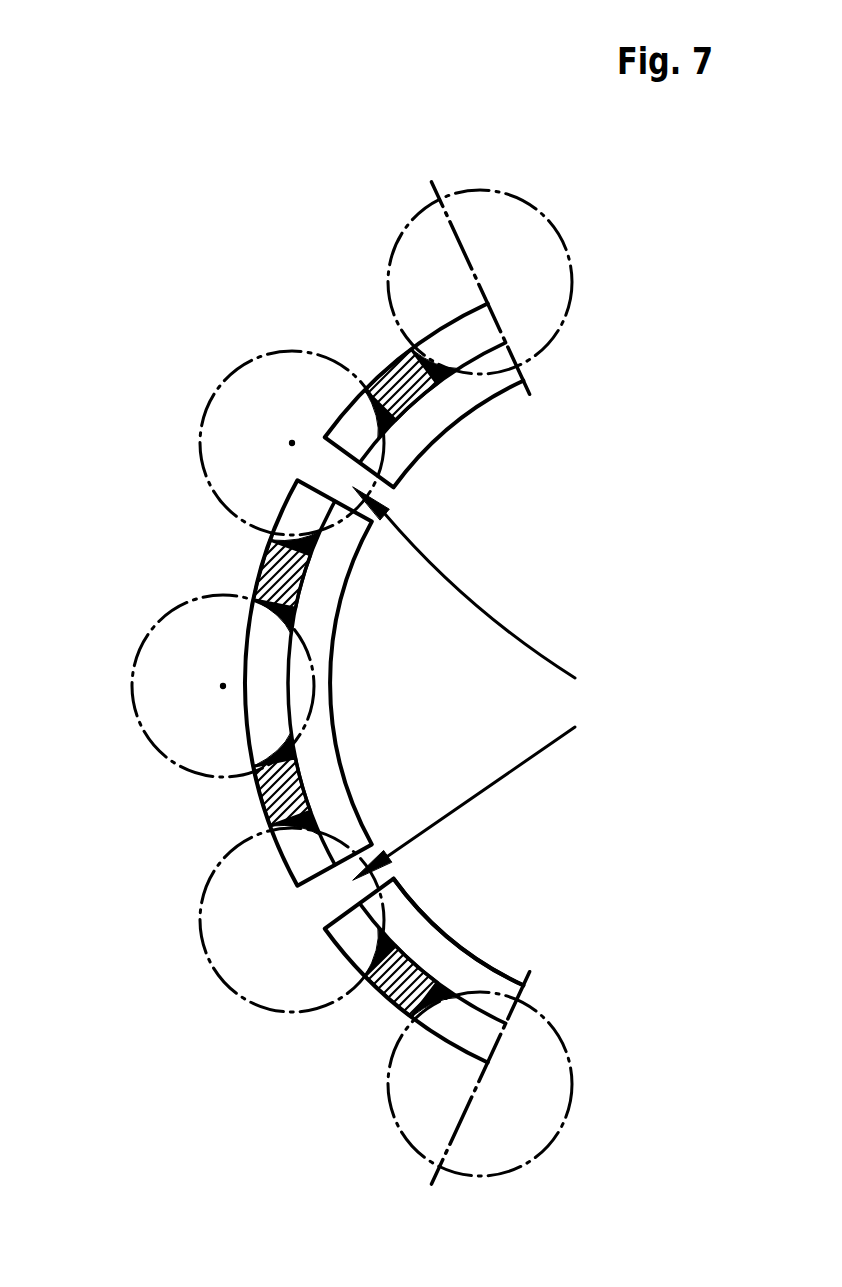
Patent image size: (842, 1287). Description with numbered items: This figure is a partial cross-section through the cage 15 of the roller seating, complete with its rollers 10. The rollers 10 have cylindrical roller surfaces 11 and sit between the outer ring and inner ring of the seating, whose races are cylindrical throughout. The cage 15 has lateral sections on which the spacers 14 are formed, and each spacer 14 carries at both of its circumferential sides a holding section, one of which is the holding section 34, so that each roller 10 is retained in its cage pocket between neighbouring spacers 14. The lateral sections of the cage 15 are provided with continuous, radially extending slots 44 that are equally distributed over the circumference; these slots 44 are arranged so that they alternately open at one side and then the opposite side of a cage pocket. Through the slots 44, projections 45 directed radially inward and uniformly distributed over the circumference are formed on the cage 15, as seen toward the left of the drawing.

The rollers 10 is at (213, 868).
The cylindrical roller surfaces 11 is at (150, 612).
The spacers 14 is at (381, 385).
The cage 15 is at (377, 993).
The holding section 34 is at (300, 548).
The slots 44 is at (485, 683).
The projections 45 is at (484, 946).